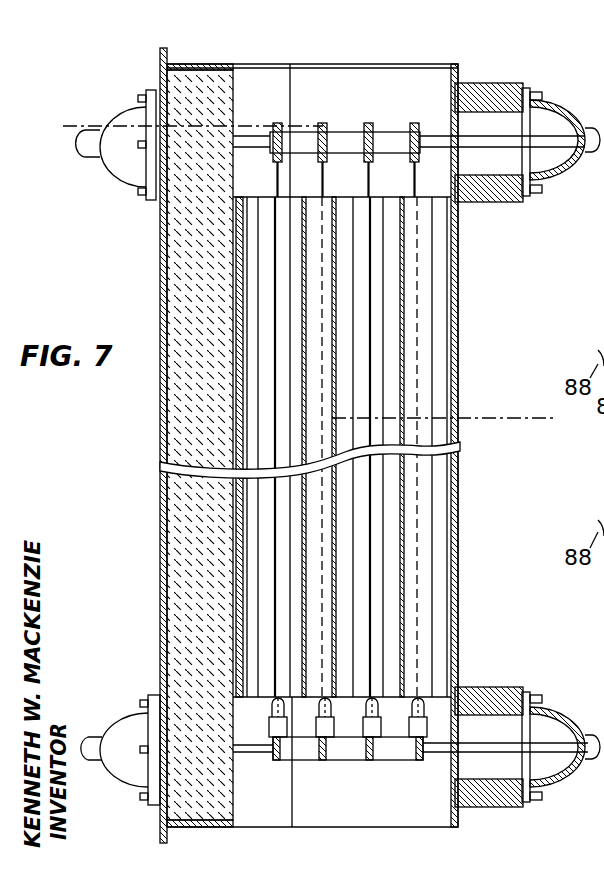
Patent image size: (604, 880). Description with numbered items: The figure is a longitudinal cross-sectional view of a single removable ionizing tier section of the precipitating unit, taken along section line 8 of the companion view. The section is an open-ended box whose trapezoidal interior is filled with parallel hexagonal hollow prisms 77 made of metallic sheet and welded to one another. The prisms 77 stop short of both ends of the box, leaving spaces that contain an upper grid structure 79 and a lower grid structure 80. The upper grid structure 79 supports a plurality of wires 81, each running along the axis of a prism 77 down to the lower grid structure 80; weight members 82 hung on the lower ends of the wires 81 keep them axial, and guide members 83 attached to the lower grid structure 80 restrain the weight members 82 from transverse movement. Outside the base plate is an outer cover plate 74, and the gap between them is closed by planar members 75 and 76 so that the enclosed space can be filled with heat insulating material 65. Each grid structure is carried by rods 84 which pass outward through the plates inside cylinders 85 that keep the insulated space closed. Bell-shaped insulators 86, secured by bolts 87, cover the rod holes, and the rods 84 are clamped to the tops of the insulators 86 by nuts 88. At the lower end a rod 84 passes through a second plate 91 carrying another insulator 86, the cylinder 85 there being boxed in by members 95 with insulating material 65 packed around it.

The section line 8— 8 is at (92, 123).
The heat insulating material 65 is at (485, 203).
The outer cover plate 74 is at (165, 596).
The planar member 75 is at (209, 824).
The planar member 76 is at (222, 68).
The hexagonal hollow prism 77 is at (400, 270).
The upper grid structure 79 is at (349, 132).
The lower grid structure 80 is at (357, 752).
The wire 81 is at (414, 180).
The weight member 82 is at (418, 700).
The guide member 83 is at (418, 723).
The rod 84 is at (447, 748).
The cylinder 85 is at (486, 190).
The bell-shaped insulator 86 is at (568, 120).
The bolt 87 is at (141, 190).
The nut 88 is at (80, 146).
The second plate 91 is at (523, 196).
The box member 95 is at (478, 85).